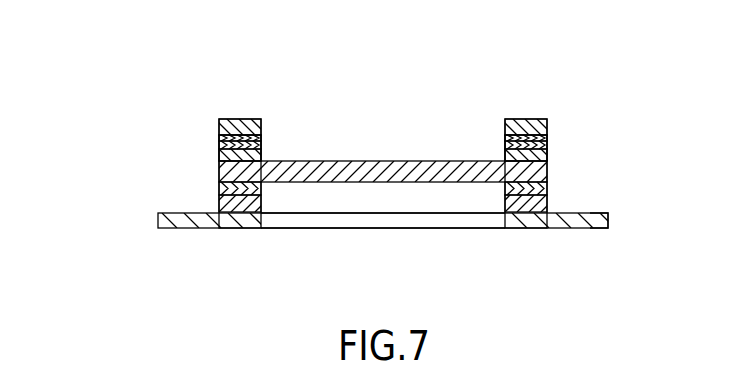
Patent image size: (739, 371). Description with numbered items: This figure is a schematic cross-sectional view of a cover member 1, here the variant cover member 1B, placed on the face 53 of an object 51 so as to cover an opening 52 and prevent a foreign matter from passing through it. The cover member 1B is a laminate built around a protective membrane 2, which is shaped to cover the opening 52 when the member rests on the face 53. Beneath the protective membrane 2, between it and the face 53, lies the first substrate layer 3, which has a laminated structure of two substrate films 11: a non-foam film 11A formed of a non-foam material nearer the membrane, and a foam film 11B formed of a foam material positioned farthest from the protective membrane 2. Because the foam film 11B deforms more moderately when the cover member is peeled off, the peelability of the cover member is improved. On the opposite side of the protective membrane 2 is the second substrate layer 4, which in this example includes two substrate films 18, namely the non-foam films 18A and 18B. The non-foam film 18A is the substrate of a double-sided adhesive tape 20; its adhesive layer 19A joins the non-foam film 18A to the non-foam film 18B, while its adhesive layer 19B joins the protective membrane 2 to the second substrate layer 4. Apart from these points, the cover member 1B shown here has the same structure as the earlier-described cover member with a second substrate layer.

The cover member 1 is at (335, 140).
The cover member 1B is at (335, 140).
The protective membrane 2 is at (475, 172).
The first substrate layer 3 is at (299, 190).
The second substrate layer 4 is at (368, 107).
The substrate film 11 is at (315, 190).
The non-foam film 11A is at (219, 187).
The foam film 11B is at (219, 212).
The substrate film 18 is at (378, 101).
The non-foam film 18A is at (262, 145).
The non-foam film 18B is at (238, 128).
The adhesive layer 19A is at (262, 136).
The adhesive layer 19B is at (262, 157).
The double-sided adhesive tape 20 is at (397, 85).
The object 51 is at (608, 224).
The opening 52 is at (387, 218).
The face 53 is at (598, 213).